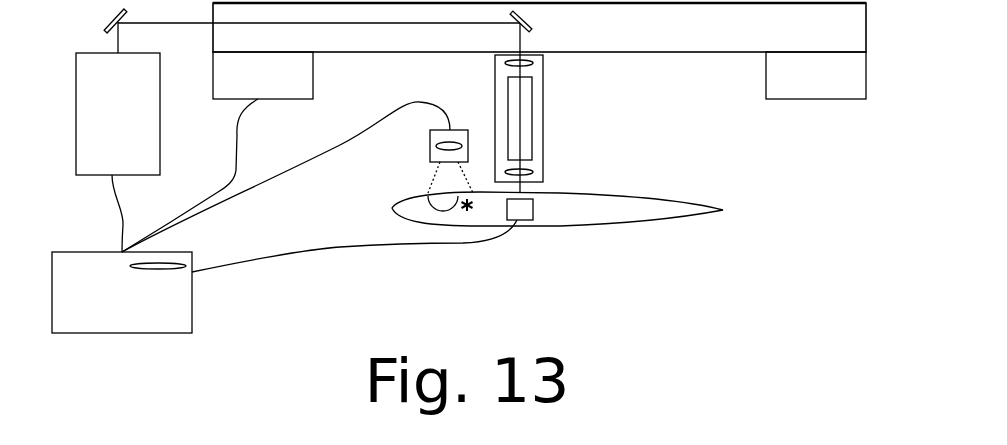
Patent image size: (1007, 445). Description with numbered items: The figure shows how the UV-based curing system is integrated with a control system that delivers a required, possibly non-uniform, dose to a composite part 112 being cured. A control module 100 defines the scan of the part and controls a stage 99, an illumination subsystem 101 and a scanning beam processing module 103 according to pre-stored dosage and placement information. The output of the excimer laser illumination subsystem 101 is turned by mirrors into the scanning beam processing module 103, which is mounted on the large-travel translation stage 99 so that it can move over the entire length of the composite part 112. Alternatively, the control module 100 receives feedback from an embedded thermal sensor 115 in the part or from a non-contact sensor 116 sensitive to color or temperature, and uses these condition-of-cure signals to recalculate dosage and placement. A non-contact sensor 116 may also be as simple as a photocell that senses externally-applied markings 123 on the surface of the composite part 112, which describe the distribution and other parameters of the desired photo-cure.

The stage 99 is at (313, 78).
The control module 100 is at (192, 312).
The illumination subsystem 101 is at (160, 111).
The scanning beam processing module 103 is at (543, 113).
The composite part 112 is at (667, 198).
The embedded thermal sensor 115 is at (525, 220).
The non-contact sensor 116 is at (430, 145).
The markings 123 is at (475, 205).